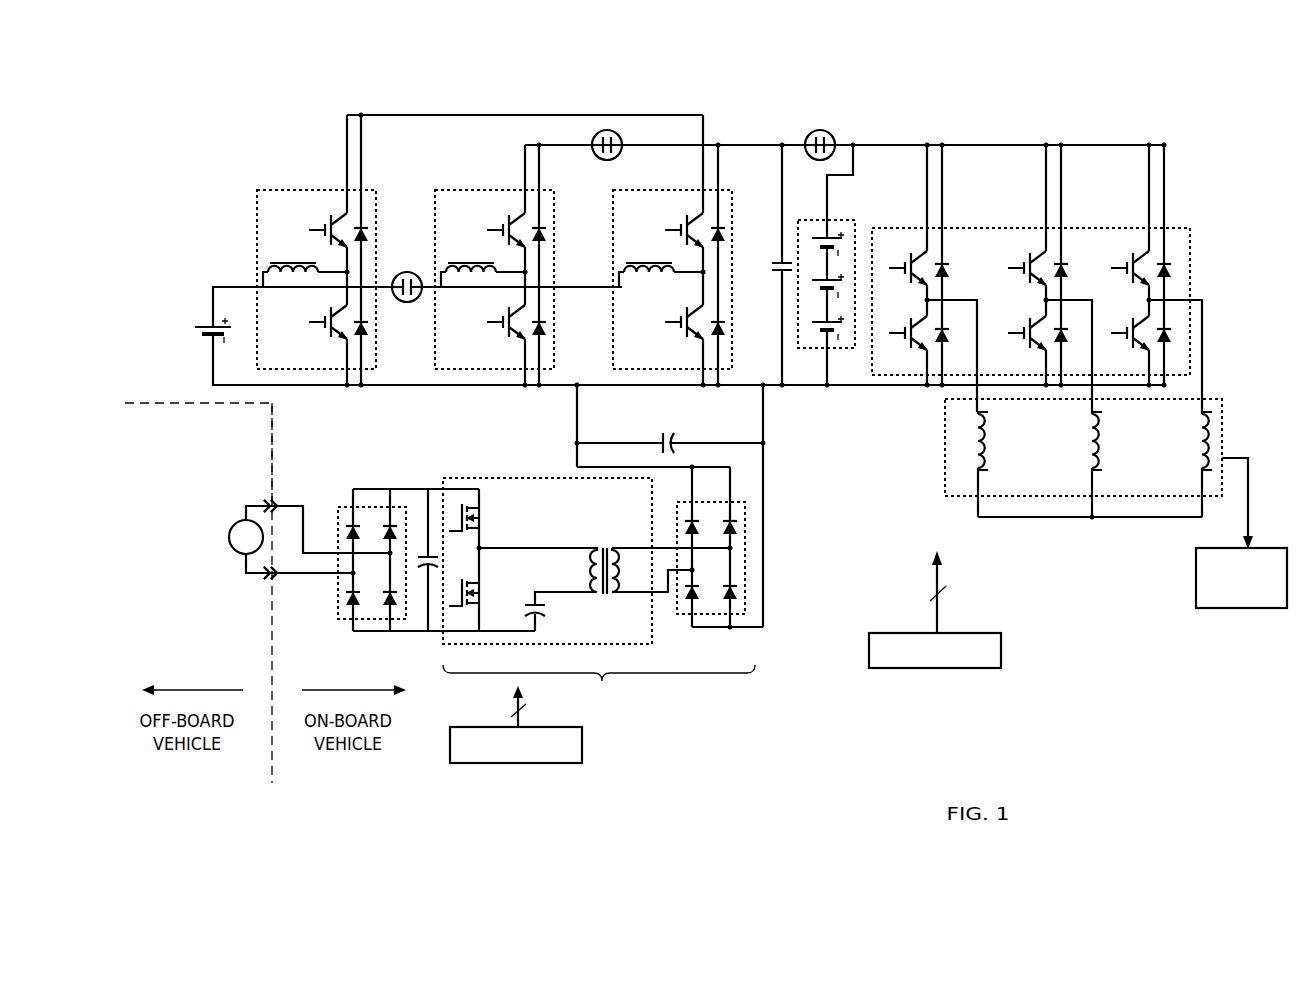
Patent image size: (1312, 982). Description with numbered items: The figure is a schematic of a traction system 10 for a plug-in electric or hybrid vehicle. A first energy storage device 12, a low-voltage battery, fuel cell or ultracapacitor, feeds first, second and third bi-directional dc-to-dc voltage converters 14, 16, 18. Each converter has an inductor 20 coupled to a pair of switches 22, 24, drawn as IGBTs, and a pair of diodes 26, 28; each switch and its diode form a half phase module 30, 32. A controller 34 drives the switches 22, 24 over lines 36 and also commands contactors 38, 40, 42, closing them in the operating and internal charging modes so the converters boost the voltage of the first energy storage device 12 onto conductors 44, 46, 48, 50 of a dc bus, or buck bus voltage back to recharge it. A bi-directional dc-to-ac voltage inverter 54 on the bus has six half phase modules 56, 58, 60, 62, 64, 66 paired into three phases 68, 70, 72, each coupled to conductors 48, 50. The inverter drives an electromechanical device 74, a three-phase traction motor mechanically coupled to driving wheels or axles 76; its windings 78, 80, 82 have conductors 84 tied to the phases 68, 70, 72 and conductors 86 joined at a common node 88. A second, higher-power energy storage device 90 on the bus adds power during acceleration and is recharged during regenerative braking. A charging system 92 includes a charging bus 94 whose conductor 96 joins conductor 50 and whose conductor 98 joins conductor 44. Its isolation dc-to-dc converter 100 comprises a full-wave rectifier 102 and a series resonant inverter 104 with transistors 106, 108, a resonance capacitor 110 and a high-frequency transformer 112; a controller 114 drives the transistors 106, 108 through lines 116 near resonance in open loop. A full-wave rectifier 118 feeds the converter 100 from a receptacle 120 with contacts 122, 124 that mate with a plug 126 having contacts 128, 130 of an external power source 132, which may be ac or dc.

The traction system 10 is at (735, 101).
The first energy storage device 12 is at (206, 326).
The first bi-directional dc-to-dc voltage converter 14 is at (272, 190).
The second bi-directional dc-to-dc voltage converter 16 is at (458, 190).
The third bi-directional dc-to-dc voltage converter 18 is at (662, 190).
The inductor 20 is at (287, 262).
The switch 22 is at (309, 231).
The switch 24 is at (310, 321).
The diode 26 is at (371, 235).
The diode 28 is at (371, 331).
The half phase module 30 is at (330, 208).
The half phase module 32 is at (317, 349).
The controller 34 is at (869, 656).
The lines 36 is at (938, 609).
The contactor 38 is at (618, 140).
The contactor 40 is at (408, 303).
The contactor 42 is at (831, 140).
The conductor 44 is at (541, 145).
The conductor 46 is at (746, 145).
The conductor 48 is at (888, 145).
The conductor 50 is at (843, 386).
The bi-directional dc-to-ac voltage inverter 54 is at (879, 228).
The half phase module 56 is at (917, 251).
The half phase module 58 is at (914, 310).
The half phase module 60 is at (1035, 251).
The half phase module 62 is at (1033, 310).
The half phase module 64 is at (1139, 251).
The half phase module 66 is at (1136, 310).
The phase 68 is at (950, 215).
The phase 70 is at (1068, 215).
The phase 72 is at (1171, 215).
The electromechanical device 74 is at (945, 481).
The driving wheels or axles 76 is at (1210, 608).
The winding 78 is at (990, 450).
The winding 80 is at (1100, 450).
The winding 82 is at (1205, 440).
The conductors 84 is at (985, 412).
The conductors 86 is at (985, 490).
The common node 88 is at (1130, 517).
The second energy storage device 90 is at (821, 220).
The charging system 92 is at (807, 566).
The charging bus 94 is at (755, 421).
The conductor 96 is at (765, 395).
The conductor 98 is at (576, 395).
The isolation dc-to-dc converter 100 is at (599, 686).
The full-wave rectifier 102 is at (746, 507).
The inverter 104 is at (538, 478).
The transistor 106 is at (483, 530).
The transistor 108 is at (483, 605).
The resonance capacitor 110 is at (541, 620).
The transformer 112 is at (599, 548).
The controller 114 is at (450, 748).
The lines 116 is at (516, 703).
The full-wave rectifier 118 is at (341, 507).
The receptacle 120 is at (283, 449).
The contact 122 is at (279, 502).
The contact 124 is at (279, 578).
The plug or connector 126 is at (263, 458).
The contact 128 is at (267, 502).
The contact 130 is at (267, 578).
The external power source 132 is at (229, 535).